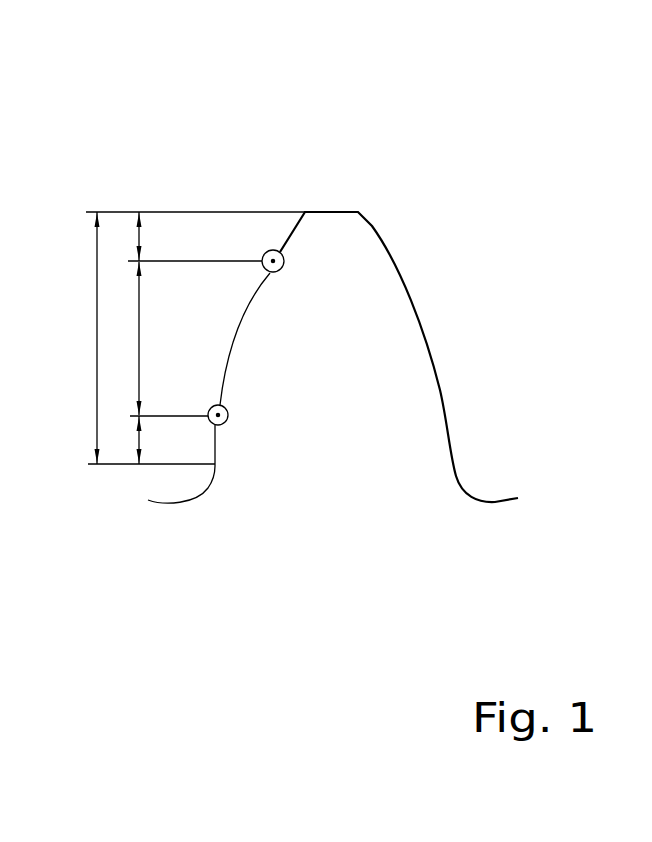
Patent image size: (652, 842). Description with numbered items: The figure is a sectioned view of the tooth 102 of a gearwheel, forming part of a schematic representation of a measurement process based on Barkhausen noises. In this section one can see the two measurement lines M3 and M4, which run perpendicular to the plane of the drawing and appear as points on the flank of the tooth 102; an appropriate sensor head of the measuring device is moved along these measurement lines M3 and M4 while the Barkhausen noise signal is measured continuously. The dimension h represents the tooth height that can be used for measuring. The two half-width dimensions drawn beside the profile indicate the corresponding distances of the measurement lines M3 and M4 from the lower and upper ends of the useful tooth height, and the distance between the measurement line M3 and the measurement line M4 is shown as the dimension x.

The tooth 102 is at (357, 212).
The measurement line M4 is at (266, 250).
The measurement line M3 is at (228, 422).
The tooth height h is at (98, 340).
The distance between measurement lines x is at (139, 338).